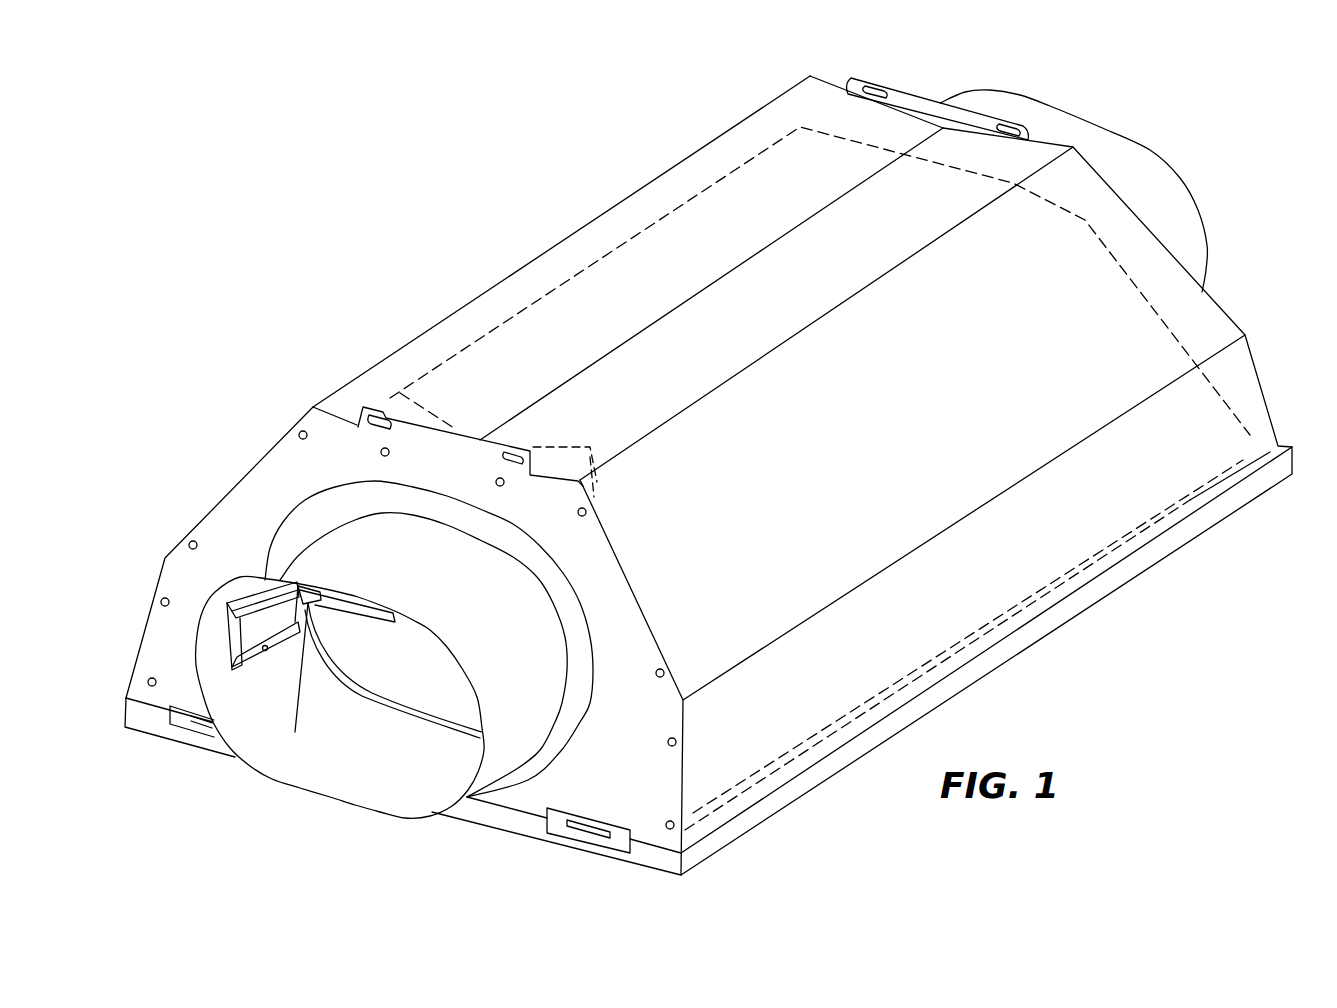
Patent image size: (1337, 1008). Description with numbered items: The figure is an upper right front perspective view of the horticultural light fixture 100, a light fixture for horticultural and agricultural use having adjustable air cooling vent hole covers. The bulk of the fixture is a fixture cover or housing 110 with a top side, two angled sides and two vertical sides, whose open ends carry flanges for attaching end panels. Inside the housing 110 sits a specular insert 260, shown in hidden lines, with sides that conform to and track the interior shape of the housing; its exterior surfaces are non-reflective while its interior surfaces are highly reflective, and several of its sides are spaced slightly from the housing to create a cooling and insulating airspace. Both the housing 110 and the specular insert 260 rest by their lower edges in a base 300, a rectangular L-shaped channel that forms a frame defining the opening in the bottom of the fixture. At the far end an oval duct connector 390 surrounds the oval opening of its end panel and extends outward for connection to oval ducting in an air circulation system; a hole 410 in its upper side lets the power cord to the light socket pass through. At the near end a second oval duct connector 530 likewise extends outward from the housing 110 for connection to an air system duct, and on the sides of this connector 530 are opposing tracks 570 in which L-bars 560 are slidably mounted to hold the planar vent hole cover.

The horticultural light fixture 100 is at (708, 480).
The housing 110 is at (742, 122).
The specular insert 260 is at (608, 253).
The base 300 is at (643, 858).
The oval duct connector 390 is at (1047, 122).
The hole 410 is at (982, 160).
The oval duct connector 530 is at (412, 817).
The L-bars 560 is at (295, 732).
The tracks 570 is at (240, 666).